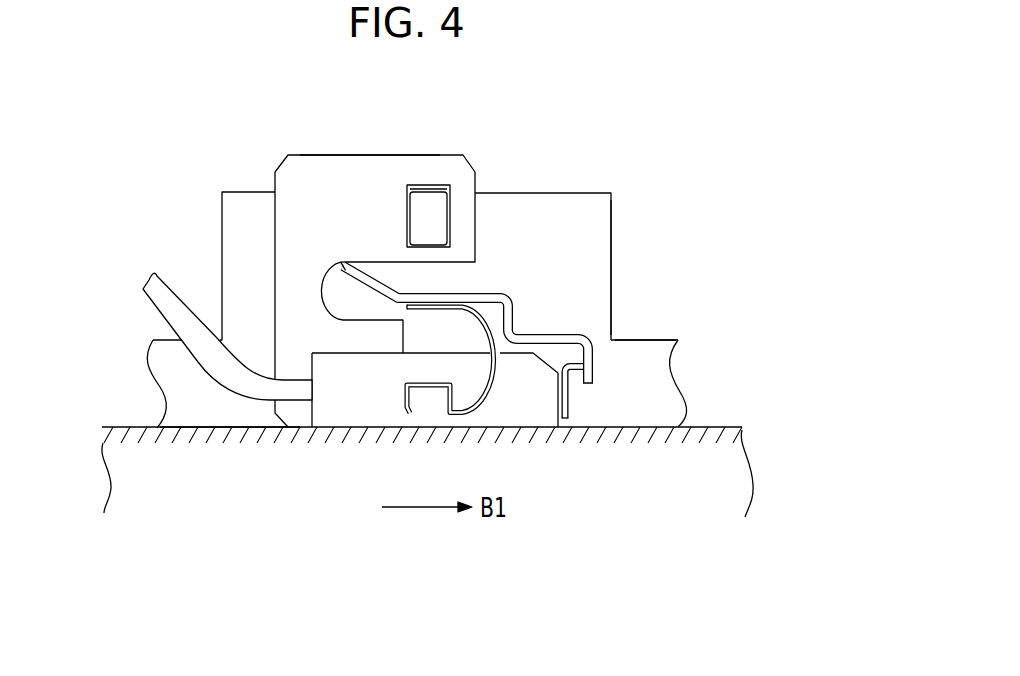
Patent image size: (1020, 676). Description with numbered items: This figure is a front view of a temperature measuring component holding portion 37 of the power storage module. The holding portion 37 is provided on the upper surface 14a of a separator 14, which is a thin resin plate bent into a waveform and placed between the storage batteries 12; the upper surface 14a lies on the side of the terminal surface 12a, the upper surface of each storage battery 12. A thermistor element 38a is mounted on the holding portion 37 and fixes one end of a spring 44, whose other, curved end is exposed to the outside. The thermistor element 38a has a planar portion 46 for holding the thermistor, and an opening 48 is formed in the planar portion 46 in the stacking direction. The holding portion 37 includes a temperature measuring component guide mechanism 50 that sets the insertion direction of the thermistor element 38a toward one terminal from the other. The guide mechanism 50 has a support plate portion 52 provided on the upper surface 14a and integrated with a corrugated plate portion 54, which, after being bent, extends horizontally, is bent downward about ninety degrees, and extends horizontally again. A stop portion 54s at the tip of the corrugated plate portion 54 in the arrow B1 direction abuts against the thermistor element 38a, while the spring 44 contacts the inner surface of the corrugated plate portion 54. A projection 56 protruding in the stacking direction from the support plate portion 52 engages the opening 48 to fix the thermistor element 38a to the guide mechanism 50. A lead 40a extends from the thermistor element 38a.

The storage battery 12 is at (717, 426).
The terminal surface 12a is at (198, 427).
The separator 14 is at (687, 352).
The upper surface of the separator 14a is at (650, 338).
The temperature measuring component holding portion 37 is at (687, 101).
The thermistor element 38a is at (369, 143).
The lead wire 40a is at (168, 295).
The spring 44 is at (496, 375).
The planar portion 46 is at (321, 172).
The opening 48 is at (413, 222).
The temperature measuring component guide mechanism 50 is at (582, 192).
The support plate portion 52 is at (597, 277).
The corrugated plate portion 54 is at (509, 308).
The stop portion 54s is at (564, 407).
The projection 56 is at (424, 205).